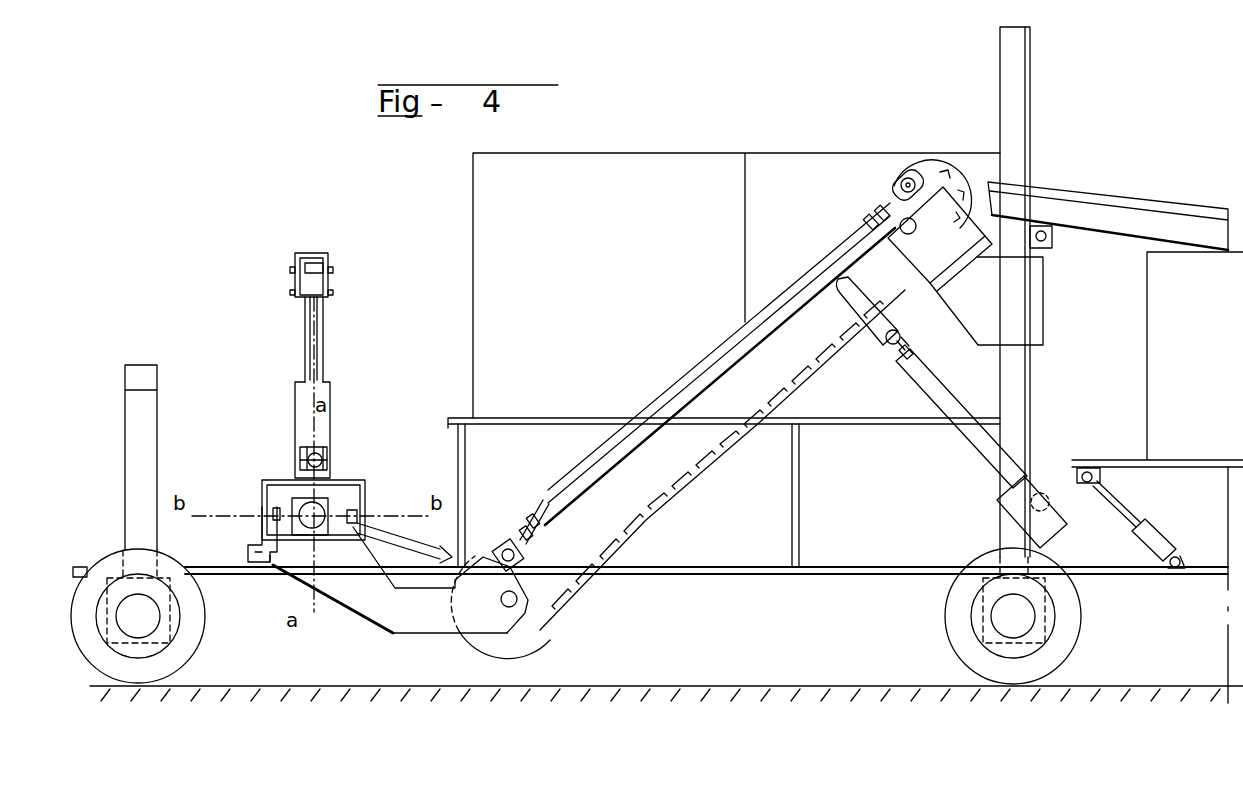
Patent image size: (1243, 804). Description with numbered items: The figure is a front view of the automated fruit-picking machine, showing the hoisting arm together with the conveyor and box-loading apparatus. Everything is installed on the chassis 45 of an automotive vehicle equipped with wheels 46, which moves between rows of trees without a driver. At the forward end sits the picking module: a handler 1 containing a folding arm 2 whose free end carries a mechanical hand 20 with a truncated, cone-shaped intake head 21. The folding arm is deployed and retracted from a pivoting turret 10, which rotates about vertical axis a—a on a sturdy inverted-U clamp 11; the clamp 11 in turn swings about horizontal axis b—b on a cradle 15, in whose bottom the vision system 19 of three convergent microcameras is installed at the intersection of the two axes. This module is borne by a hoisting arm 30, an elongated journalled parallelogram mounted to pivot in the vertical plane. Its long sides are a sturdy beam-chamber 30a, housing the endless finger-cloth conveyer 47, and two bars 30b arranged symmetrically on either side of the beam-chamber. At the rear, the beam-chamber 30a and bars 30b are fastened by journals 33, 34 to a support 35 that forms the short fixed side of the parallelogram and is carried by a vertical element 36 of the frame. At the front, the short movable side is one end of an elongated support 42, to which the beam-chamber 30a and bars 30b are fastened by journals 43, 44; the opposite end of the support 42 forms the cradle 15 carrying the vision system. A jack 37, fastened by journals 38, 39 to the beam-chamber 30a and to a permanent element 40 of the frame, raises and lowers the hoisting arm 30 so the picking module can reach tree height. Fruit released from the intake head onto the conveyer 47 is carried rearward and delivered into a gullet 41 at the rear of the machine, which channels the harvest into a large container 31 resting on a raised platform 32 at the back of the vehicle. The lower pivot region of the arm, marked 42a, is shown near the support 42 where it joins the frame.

The handler 1 is at (282, 325).
The folding arm 2 is at (333, 343).
The pivoting turret 10 is at (303, 413).
The clamp 11 is at (262, 500).
The cradle 15 is at (262, 528).
The vision system 19 is at (320, 508).
The mechanical hand 20 is at (392, 515).
The intake head 21 is at (450, 552).
The hoisting arm 30 is at (699, 419).
The beam-chamber 30a is at (625, 520).
The bars 30b is at (600, 473).
The container 31 is at (1160, 268).
The platform 32 is at (1177, 465).
The journal 33 is at (905, 175).
The journal 34 is at (914, 220).
The support 35 is at (932, 190).
The vertical element 36 is at (1018, 132).
The jack 37 is at (948, 402).
The journal 38 is at (1058, 522).
The journal 39 is at (860, 290).
The permanent element 40 is at (1032, 520).
The gullet 41 is at (1068, 205).
The elongated support 42 is at (395, 620).
The swing boss 42a is at (455, 633).
The journal 43 is at (508, 607).
The journal 44 is at (522, 567).
The chassis 45 is at (843, 575).
The wheels 46 is at (160, 668).
The conveyer 47 is at (585, 583).